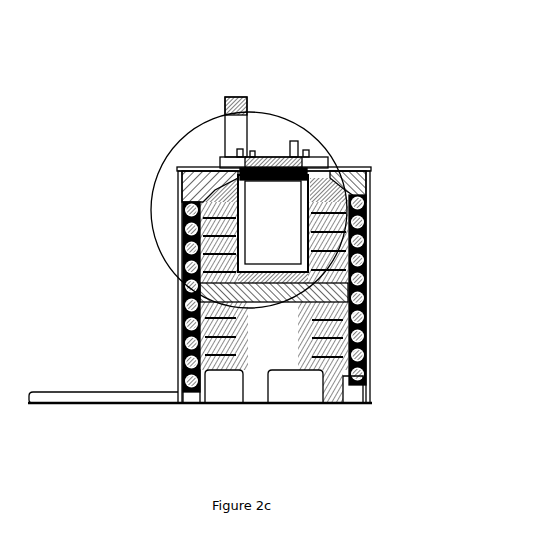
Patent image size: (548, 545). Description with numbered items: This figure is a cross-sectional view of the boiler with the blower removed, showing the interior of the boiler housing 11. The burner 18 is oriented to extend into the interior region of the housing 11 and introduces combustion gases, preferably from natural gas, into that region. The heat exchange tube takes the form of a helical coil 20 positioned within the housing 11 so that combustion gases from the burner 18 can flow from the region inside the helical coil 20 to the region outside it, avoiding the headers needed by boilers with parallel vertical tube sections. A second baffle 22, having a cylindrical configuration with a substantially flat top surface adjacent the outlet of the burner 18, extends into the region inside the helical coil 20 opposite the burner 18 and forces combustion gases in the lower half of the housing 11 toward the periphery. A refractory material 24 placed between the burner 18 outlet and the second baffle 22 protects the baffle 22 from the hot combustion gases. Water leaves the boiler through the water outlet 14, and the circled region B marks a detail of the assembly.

The boiler housing 11 is at (366, 183).
The water outlet 14 is at (247, 123).
The burner 18 is at (279, 234).
The helical coil 20 is at (203, 170).
The second baffle 22 is at (307, 372).
The refractory material 24 is at (368, 322).
The detail region B is at (151, 228).